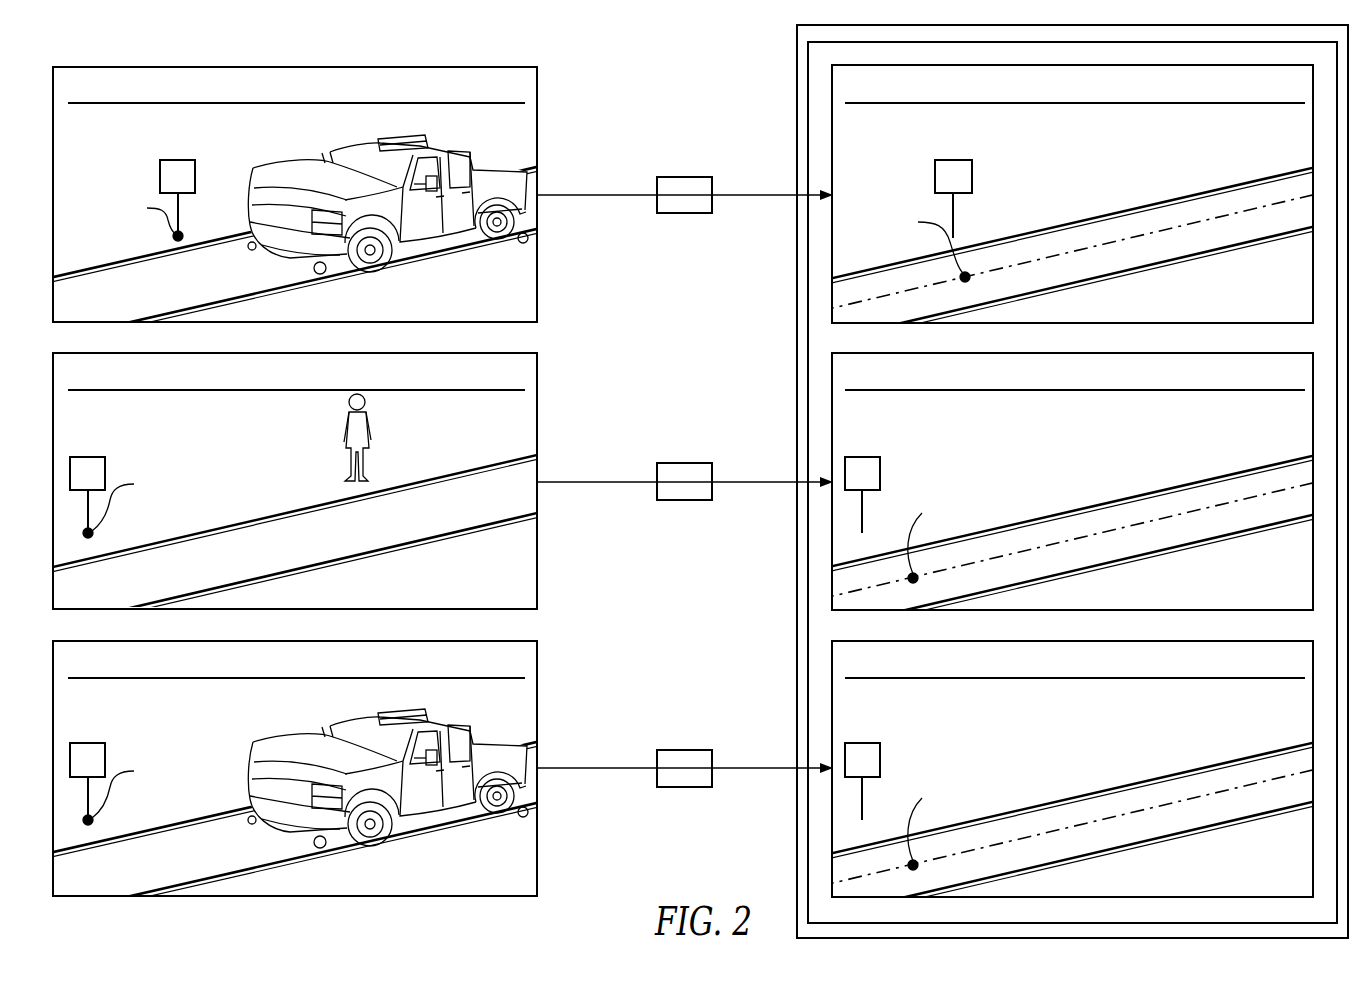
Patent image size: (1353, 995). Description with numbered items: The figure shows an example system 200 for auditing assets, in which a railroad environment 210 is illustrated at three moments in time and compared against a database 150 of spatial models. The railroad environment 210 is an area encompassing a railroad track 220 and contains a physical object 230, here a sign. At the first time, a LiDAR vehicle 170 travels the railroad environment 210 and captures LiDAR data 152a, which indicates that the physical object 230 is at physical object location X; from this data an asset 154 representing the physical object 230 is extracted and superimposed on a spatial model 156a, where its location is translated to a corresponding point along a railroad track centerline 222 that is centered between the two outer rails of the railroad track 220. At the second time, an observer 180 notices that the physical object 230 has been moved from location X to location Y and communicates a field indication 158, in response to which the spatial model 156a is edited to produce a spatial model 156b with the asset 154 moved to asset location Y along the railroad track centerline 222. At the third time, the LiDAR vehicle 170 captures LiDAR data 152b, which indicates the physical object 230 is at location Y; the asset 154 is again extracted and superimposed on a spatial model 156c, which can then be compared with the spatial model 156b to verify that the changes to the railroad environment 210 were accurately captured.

The system 200 is at (694, 481).
The database 150 is at (808, 98).
The LiDAR data 152a is at (685, 209).
The LiDAR data 152b is at (685, 782).
The field indication 158 is at (685, 495).
The spatial model 156a is at (1072, 194).
The spatial model 156b is at (1072, 481).
The spatial model 156c is at (1072, 769).
The railroad environment 210 is at (295, 487).
The physical object 230 is at (176, 160).
The LiDAR vehicle 170 is at (440, 142).
The railroad track 220 is at (297, 286).
The observer 180 is at (372, 418).
The asset 154 is at (951, 160).
The railroad track centerline 222 is at (1025, 263).